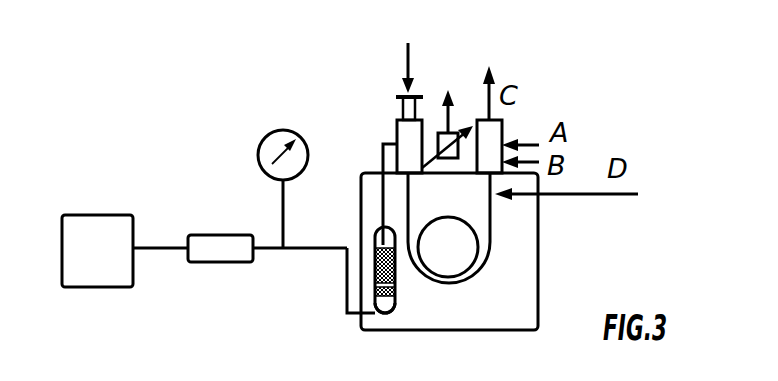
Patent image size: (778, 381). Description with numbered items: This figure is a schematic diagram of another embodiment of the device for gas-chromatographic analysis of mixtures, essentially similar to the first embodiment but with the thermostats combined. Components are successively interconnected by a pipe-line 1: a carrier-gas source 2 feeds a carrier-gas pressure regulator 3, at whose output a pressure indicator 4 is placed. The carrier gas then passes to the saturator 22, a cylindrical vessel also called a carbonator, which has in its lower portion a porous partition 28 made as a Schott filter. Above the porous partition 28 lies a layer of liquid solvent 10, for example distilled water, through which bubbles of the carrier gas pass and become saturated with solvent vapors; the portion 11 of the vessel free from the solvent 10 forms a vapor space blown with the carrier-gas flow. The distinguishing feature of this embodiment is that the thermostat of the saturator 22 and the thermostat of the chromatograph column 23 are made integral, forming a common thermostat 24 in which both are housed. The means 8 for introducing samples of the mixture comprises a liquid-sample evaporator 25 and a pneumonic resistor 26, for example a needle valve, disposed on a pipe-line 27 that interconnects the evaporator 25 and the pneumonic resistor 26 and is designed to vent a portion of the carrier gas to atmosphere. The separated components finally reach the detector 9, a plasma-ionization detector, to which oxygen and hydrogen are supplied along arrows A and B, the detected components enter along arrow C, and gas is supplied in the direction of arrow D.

The pipe-line 1 is at (153, 247).
The carrier-gas source 2 is at (97, 251).
The carrier-gas pressure regulator 3 is at (213, 240).
The pressure indicator 4 is at (307, 144).
The means for introducing samples 8 is at (376, 130).
The detector 9 is at (495, 130).
The liquid solvent 10 is at (395, 273).
The portion of the saturator free from the solvent 11 is at (376, 232).
The saturator 22 is at (375, 276).
The chromatograph column 23 is at (491, 237).
The common thermostat 24 is at (513, 303).
The liquid-sample evaporator 25 is at (417, 133).
The pneumonic resistor 26 is at (463, 127).
The pipe-line 27 is at (430, 165).
The porous partition 28 is at (375, 297).